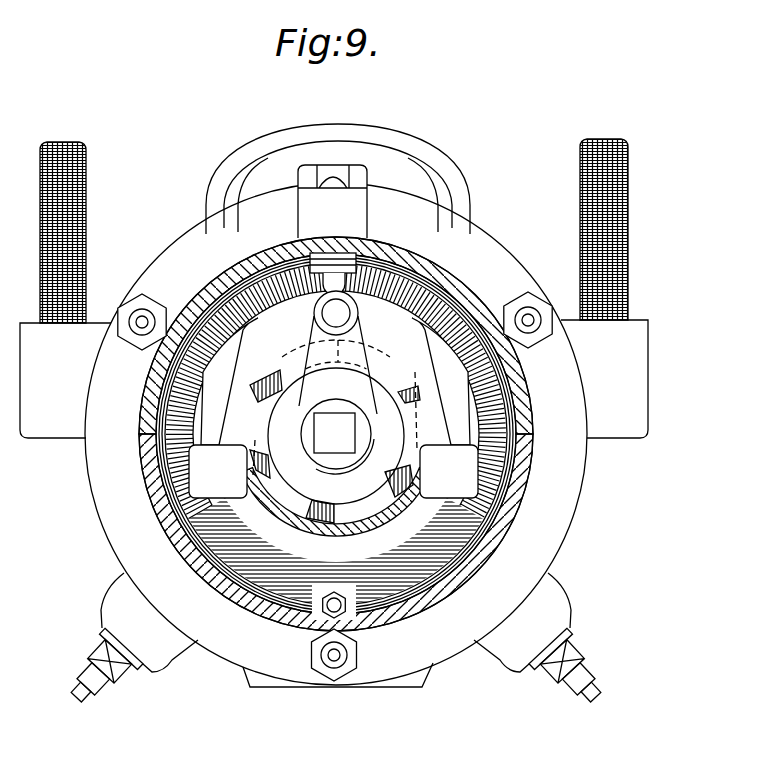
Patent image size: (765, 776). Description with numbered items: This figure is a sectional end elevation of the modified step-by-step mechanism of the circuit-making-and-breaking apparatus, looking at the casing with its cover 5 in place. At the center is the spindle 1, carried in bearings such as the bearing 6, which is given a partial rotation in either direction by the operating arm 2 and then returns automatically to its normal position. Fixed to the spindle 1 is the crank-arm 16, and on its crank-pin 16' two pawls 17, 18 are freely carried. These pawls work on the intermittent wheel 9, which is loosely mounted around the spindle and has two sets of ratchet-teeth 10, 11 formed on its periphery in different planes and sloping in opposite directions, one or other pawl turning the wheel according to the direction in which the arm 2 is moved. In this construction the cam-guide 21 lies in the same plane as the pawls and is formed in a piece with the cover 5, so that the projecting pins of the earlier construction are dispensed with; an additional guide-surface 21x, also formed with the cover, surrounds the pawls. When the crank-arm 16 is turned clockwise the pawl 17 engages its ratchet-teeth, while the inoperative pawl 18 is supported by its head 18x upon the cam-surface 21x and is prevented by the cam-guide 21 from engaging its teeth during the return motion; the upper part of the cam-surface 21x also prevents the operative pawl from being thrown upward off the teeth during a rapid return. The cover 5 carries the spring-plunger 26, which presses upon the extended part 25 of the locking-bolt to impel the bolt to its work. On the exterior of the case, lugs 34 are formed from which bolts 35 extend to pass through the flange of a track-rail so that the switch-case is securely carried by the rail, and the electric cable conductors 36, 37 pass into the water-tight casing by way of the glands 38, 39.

The spindle 1 is at (344, 441).
The arm 2 is at (354, 142).
The cover 5 is at (526, 470).
The bearing 6 is at (325, 491).
The intermittent wheel 9 is at (283, 477).
The ratchet-teeth 10 is at (328, 525).
The ratchet-teeth 11 is at (400, 512).
The crank-arm 16 is at (321, 378).
The crank-pin 16' is at (359, 315).
The pawl 17 is at (254, 352).
The pawl 18 is at (419, 360).
The head 18x is at (446, 486).
The cam-guide 21 is at (360, 530).
The guide-surface 21x is at (431, 292).
The extended part 25 is at (336, 282).
The spring-plunger 26 is at (324, 254).
The lugs 34 is at (58, 437).
The bolts 35 is at (86, 232).
The electric cable conductor 36 is at (96, 695).
The electric cable conductor 37 is at (584, 690).
The gland 38 is at (563, 608).
The gland 39 is at (160, 666).